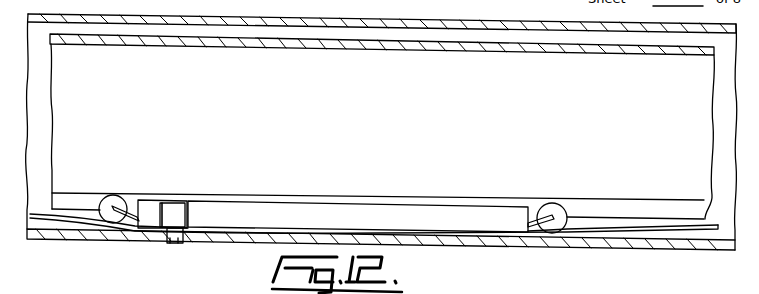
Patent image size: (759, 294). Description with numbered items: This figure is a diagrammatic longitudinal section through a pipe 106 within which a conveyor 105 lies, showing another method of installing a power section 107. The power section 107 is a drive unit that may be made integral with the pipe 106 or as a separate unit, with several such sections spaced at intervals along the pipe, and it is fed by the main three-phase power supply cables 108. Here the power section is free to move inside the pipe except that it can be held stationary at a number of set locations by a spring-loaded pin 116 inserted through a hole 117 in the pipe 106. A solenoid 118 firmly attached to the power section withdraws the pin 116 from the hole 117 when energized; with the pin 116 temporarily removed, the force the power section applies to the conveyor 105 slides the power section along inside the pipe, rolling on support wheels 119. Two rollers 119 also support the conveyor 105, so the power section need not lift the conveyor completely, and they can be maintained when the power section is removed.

The conveyor 105 is at (609, 50).
The pipe 106 is at (454, 21).
The power section 107 is at (378, 212).
The main three-phase power supply cables 108 is at (669, 231).
The pin 116 is at (171, 244).
The hole 117 is at (181, 245).
The solenoid 118 is at (178, 204).
The support wheels / rollers 119 is at (114, 196).